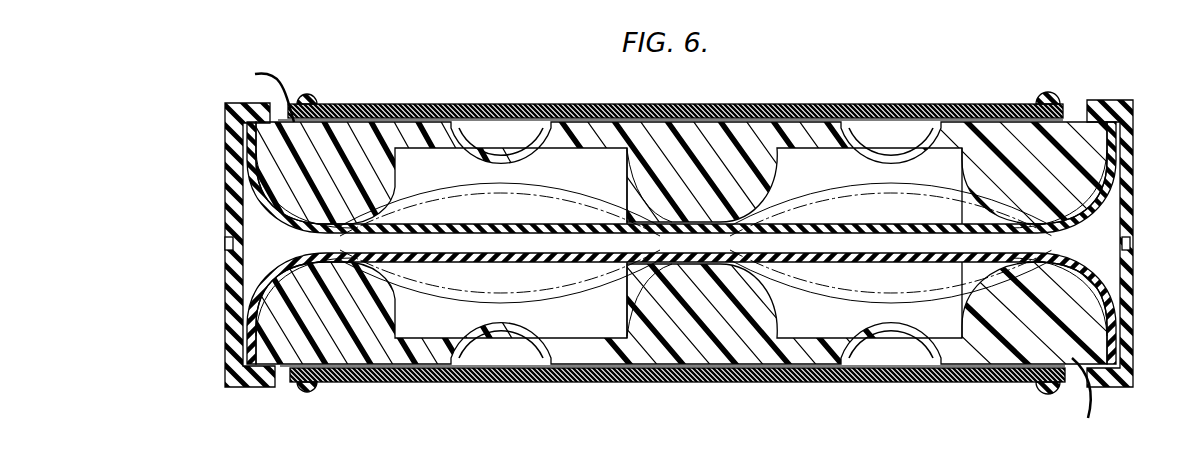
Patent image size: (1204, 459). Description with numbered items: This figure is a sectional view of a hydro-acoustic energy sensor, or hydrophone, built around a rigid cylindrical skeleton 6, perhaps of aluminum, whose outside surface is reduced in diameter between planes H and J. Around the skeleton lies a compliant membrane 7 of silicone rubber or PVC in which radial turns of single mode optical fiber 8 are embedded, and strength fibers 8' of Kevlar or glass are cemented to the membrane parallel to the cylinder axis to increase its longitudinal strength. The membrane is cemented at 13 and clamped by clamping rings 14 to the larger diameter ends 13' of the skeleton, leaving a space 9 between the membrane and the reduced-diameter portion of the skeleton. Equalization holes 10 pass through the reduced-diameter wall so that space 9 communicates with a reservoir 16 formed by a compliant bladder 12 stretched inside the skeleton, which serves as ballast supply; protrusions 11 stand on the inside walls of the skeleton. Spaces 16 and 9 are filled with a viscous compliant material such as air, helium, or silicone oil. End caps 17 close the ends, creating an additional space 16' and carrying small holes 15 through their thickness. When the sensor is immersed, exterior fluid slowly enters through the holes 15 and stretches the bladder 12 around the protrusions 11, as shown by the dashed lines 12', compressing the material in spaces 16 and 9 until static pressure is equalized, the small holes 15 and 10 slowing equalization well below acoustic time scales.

The rigid cylindrical skeleton 6 is at (657, 123).
The compliant membrane 7 is at (882, 135).
The single mode optical fiber 8 is at (676, 248).
The strength fibers 8' is at (458, 122).
The space 9 is at (726, 360).
The equalization holes 10 is at (484, 142).
The protrusions 11 is at (398, 161).
The compliant bladder 12 is at (1145, 280).
The stretched bladder position 12' is at (820, 368).
The cement 13 is at (714, 380).
The larger diameter ends 13' is at (676, 248).
The clamping ring 14 is at (317, 396).
The holes 15 is at (230, 247).
The reservoir 16 is at (696, 247).
The additional space 16' is at (676, 243).
The end caps 17 is at (230, 200).
The plane H is at (329, 118).
The plane J is at (1083, 122).